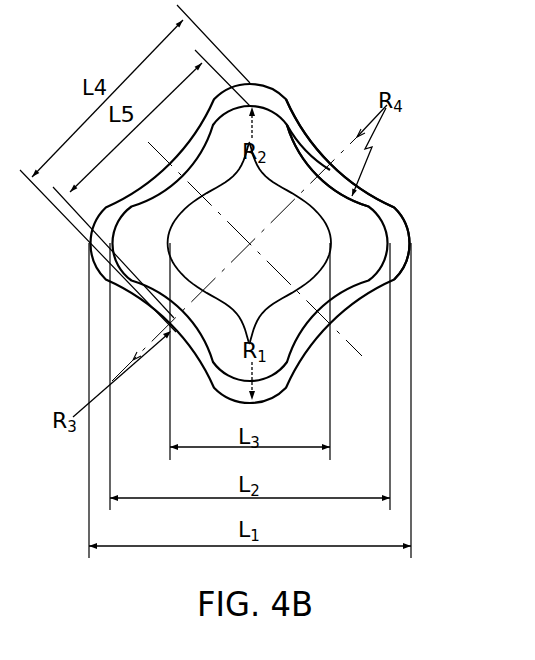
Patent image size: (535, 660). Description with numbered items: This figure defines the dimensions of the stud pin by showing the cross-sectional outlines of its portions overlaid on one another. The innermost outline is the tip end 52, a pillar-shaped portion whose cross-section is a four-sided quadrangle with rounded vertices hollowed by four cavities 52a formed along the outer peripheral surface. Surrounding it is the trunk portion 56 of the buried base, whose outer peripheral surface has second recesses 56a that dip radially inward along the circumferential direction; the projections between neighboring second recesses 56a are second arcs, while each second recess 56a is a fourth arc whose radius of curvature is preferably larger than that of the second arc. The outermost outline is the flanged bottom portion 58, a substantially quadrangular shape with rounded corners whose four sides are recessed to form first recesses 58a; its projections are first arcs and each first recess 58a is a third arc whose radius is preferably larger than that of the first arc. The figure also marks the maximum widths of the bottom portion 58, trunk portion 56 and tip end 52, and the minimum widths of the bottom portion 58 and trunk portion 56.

The tip end 52 is at (398, 213).
The cavity 52a is at (283, 204).
The trunk portion 56 is at (409, 238).
The second recess 56a is at (372, 190).
The bottom portion 58 is at (292, 108).
The first recess 58a is at (330, 160).